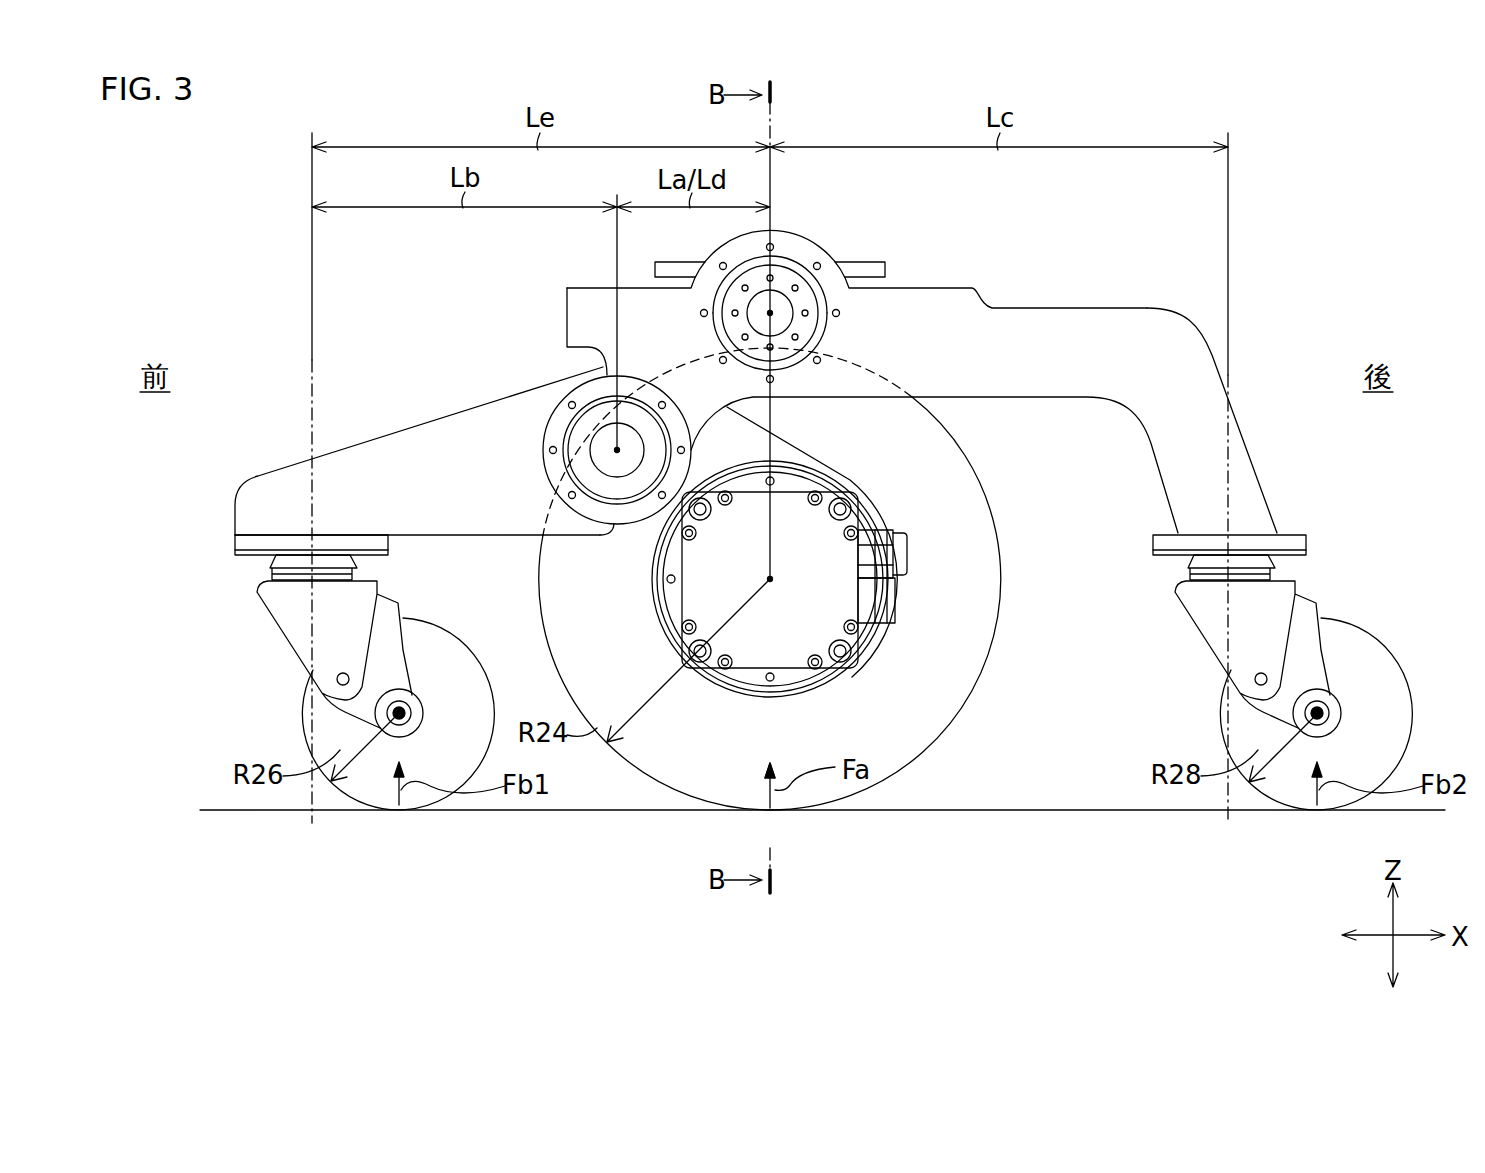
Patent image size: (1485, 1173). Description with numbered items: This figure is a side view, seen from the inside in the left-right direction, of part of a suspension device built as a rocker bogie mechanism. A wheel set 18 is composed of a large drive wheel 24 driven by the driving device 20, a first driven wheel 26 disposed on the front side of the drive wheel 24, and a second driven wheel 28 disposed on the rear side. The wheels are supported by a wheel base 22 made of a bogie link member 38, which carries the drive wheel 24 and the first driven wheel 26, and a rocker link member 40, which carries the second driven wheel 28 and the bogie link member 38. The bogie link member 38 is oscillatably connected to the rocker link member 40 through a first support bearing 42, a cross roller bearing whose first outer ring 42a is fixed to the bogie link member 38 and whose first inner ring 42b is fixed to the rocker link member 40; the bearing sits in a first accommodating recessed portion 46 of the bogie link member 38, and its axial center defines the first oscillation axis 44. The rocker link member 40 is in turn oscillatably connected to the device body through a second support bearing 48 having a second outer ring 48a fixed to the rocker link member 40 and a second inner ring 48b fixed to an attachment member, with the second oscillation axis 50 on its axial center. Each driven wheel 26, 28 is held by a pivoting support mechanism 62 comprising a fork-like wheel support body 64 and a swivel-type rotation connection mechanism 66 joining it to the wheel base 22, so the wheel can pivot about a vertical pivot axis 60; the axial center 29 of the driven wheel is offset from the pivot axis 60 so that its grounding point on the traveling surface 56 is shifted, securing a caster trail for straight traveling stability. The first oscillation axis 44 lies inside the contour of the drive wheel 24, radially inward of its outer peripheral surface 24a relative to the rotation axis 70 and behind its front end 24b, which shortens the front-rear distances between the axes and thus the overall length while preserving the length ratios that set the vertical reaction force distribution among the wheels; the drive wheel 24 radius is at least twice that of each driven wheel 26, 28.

The wheel set 18 is at (801, 707).
The driving device 20 is at (779, 612).
The wheel base 22 is at (538, 297).
The drive wheel 24 is at (728, 586).
The outer peripheral surface of the drive wheel 24a is at (690, 367).
The end of the drive wheel on the first driven wheel side 24b is at (540, 584).
The first driven wheel 26 is at (357, 810).
The second driven wheel 28 is at (1372, 810).
The axial center of the driven wheel 29 is at (401, 713).
The bogie link member 38 is at (410, 428).
The rocker link member 40 is at (1213, 345).
The first support bearing 42 is at (560, 450).
The first outer ring 42a is at (568, 468).
The first inner ring 42b is at (550, 432).
The first oscillation axis 44 is at (622, 447).
The first accommodating recessed portion 46 is at (600, 532).
The second support bearing 48 is at (812, 323).
The second outer ring 48a is at (812, 272).
The second inner ring 48b is at (792, 360).
The second oscillation axis 50 is at (772, 314).
The traveling surface 56 is at (1062, 800).
The pivot axis 60 is at (318, 500).
The pivoting support mechanism 62 is at (801, 707).
The wheel support body 64 is at (378, 585).
The rotation connection mechanism 66 is at (272, 563).
The rotation axis 70 is at (772, 582).